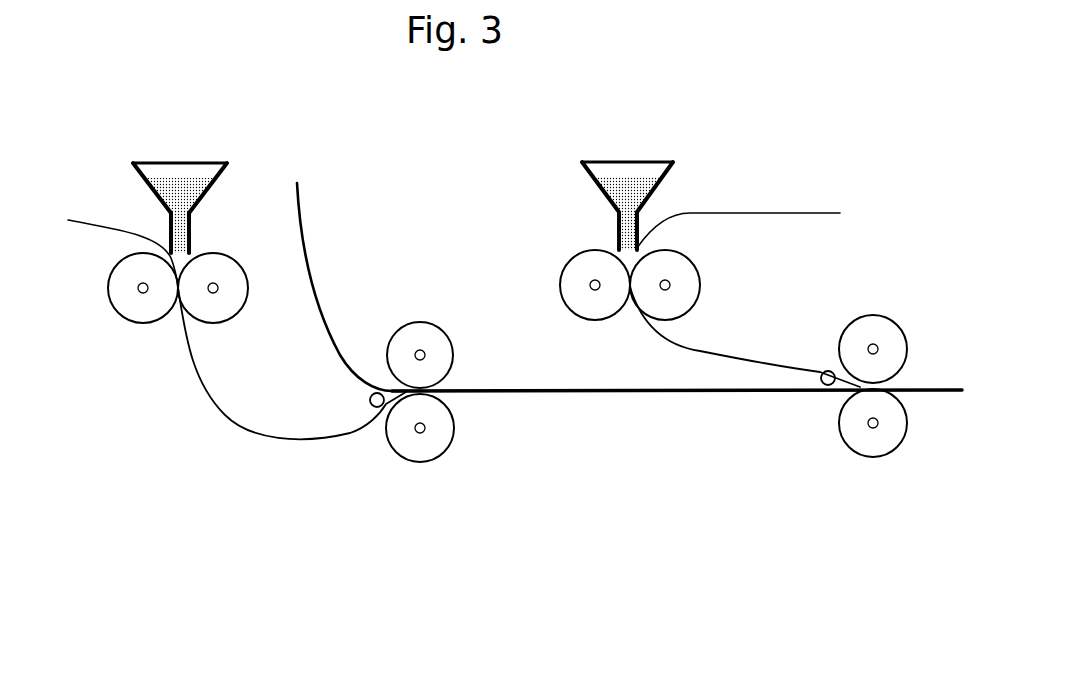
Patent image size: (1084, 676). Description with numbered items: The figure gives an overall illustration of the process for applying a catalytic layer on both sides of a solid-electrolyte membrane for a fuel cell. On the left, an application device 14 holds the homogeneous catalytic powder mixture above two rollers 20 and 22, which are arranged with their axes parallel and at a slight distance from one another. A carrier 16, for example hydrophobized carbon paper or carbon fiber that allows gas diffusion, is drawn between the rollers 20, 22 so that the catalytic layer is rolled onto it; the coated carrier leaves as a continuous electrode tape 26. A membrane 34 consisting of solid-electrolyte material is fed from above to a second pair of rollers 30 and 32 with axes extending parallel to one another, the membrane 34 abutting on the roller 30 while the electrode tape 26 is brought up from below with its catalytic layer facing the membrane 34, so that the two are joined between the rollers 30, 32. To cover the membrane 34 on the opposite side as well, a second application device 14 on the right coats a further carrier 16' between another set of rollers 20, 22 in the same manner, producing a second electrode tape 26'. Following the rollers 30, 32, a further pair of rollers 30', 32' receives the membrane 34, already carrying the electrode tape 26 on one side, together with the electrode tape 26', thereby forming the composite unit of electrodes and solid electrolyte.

The application device 14 is at (203, 200).
The carrier 16 is at (123, 231).
The carrier 16' is at (756, 208).
The roller 20 is at (135, 313).
The roller 22 is at (232, 305).
The electrode tape 26 is at (292, 394).
The electrode tape 26' is at (745, 337).
The roller 30 is at (448, 341).
The roller 32 is at (447, 439).
The roller 30' is at (896, 436).
The roller 32' is at (896, 337).
The membrane 34 is at (302, 232).